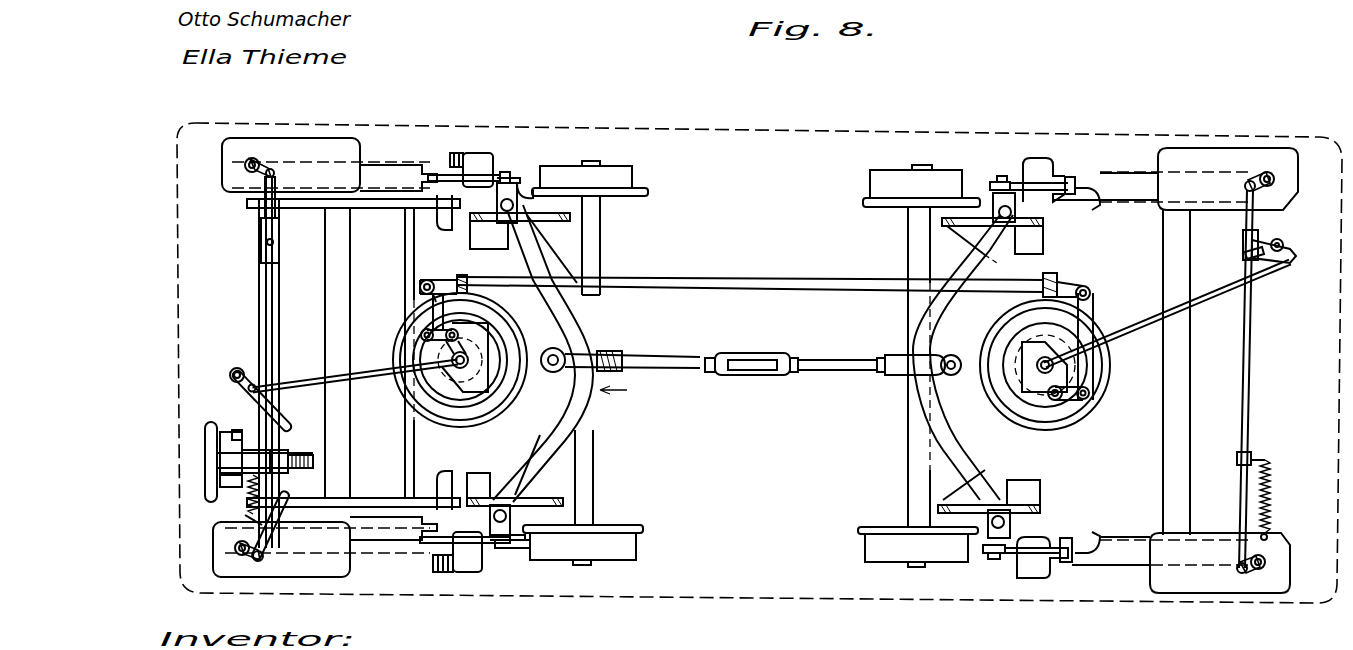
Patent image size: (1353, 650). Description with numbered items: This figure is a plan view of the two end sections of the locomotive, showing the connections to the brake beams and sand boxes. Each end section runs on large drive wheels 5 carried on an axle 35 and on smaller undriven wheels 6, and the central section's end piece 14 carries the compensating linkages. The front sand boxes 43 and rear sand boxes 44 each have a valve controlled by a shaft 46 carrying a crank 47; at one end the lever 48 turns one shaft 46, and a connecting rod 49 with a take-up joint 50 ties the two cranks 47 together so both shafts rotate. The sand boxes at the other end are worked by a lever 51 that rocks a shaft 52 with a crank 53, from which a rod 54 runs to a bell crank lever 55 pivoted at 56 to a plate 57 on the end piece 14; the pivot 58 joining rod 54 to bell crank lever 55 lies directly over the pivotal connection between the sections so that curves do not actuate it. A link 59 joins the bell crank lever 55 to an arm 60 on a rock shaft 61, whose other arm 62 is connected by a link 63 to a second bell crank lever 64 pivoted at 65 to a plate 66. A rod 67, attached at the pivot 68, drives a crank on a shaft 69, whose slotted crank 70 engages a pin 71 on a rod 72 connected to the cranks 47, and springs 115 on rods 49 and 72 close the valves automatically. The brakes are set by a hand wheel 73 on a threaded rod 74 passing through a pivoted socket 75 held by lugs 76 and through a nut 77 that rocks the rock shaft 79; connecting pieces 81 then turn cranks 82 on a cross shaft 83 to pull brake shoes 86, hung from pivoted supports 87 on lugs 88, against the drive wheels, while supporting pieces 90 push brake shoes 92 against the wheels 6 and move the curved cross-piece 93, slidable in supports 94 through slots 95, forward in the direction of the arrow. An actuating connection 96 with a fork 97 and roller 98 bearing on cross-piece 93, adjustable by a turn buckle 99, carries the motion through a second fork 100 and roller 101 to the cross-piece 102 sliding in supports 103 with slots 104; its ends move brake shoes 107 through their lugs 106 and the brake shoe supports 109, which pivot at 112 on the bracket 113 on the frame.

The drive wheels 5 is at (380, 170).
The small wheels 6 is at (610, 178).
The end piece 14 is at (468, 278).
The axle 35 is at (325, 320).
The sand boxes 43 is at (330, 140).
The sand boxes 44 is at (1192, 160).
The shaft 46 is at (248, 158).
The crank 47 is at (270, 168).
The lever 48 is at (245, 522).
The connecting rod 49 is at (272, 290).
The take-up joint 50 is at (279, 245).
The lever 51 is at (292, 420).
The shaft 52 is at (230, 374).
The crank 53 is at (248, 389).
The rod 54 is at (302, 382).
The bell crank lever 55 is at (458, 335).
The pivot 56 is at (445, 333).
The plate 57 is at (477, 387).
The pivot 58 is at (468, 364).
The link 59 is at (427, 300).
The arm 60 is at (430, 279).
The rock shaft 61 is at (650, 277).
The arm 62 is at (1088, 286).
The link 63 is at (1093, 310).
The bell crank lever 64 is at (1083, 400).
The pivot 65 is at (1052, 401).
The plate 66 is at (1030, 390).
The rod 67 is at (1145, 323).
The pivot 68 is at (1038, 368).
The shaft 69 is at (1282, 242).
The slotted crank 70 is at (1243, 240).
The pin 71 is at (1245, 256).
The rod 72 is at (1250, 328).
The hand wheel 73 is at (206, 470).
The threaded rod 74 is at (313, 462).
The pivoted socket 75 is at (237, 430).
The lugs 76 is at (222, 445).
The nut 77 is at (282, 452).
The rock shaft 79 is at (259, 303).
The connecting pieces 81 is at (372, 212).
The cranks 82 is at (445, 215).
The cross shaft 83 is at (405, 272).
The brake shoes 86 is at (428, 178).
The pivoted supports 87 is at (450, 158).
The lugs 88 is at (472, 160).
The brake shoe supporting pieces 90 is at (530, 544).
The brake shoes 92 is at (512, 180).
The curved cross-piece 93 is at (588, 405).
The supports 94 is at (552, 222).
The slots 95 is at (486, 221).
The actuating connection 96 is at (830, 360).
The fork 97 is at (615, 352).
The roller 98 is at (561, 352).
The turn buckle 99 is at (752, 376).
The fork 100 is at (902, 375).
The roller 101 is at (958, 358).
The cross-piece 102 is at (955, 457).
The supports 103 is at (1043, 241).
The slots 104 is at (965, 218).
The lugs 106 is at (1000, 176).
The brake shoes 107 is at (992, 195).
The brake shoe supports 109 is at (1092, 205).
The pivotal connection 112 is at (1072, 177).
The bracket 113 is at (1040, 165).
The springs 115 is at (262, 520).